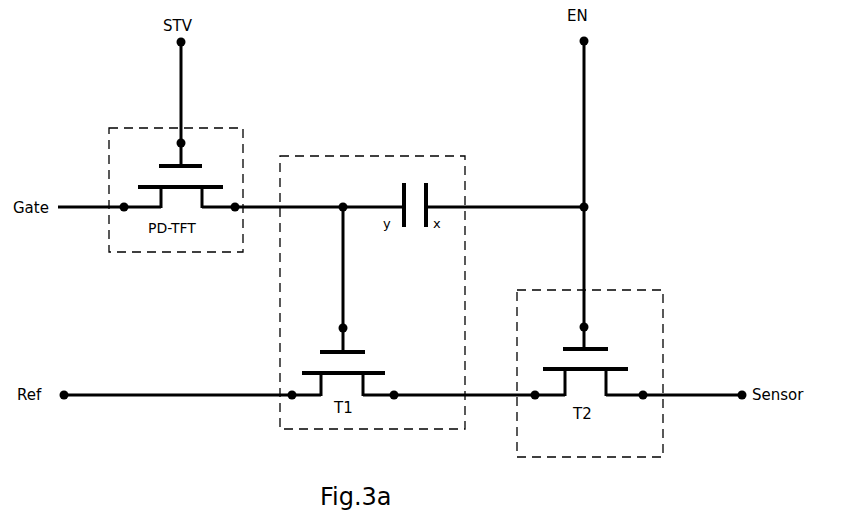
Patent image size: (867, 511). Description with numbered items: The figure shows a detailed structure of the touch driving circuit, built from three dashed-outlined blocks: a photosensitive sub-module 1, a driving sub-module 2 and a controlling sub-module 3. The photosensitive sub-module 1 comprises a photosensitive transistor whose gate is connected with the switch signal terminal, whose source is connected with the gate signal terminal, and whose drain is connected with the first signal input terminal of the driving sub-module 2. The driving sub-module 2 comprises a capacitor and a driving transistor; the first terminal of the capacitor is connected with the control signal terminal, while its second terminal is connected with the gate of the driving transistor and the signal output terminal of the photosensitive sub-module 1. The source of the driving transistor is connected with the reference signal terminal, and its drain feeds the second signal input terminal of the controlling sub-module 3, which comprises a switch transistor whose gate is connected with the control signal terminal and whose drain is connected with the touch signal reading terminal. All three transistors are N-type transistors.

The photosensitive sub-module 1 is at (142, 158).
The driving sub-module 2 is at (390, 236).
The controlling sub-module 3 is at (627, 306).